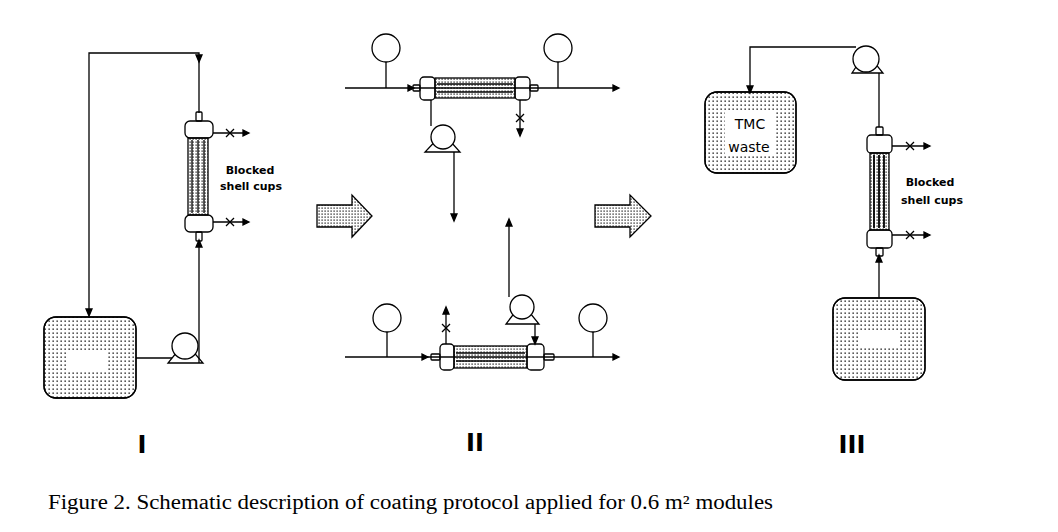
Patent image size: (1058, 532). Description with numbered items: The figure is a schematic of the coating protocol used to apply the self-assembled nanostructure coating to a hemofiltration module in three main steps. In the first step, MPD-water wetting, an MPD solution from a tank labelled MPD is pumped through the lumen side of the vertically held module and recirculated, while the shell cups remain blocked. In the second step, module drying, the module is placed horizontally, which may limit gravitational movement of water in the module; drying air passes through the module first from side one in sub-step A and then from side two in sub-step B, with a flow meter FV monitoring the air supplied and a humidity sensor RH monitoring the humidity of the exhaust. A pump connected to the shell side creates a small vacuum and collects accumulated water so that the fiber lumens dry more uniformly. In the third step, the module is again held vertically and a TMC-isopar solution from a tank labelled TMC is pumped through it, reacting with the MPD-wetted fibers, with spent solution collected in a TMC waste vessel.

The module drying from side one A is at (475, 100).
The module drying from side two B is at (492, 370).
The flow meter FV is at (386, 195).
The humidity sensor RH is at (575, 195).
The MPD-water solution MPD is at (90, 357).
The TMC-isopar solution TMC is at (879, 339).